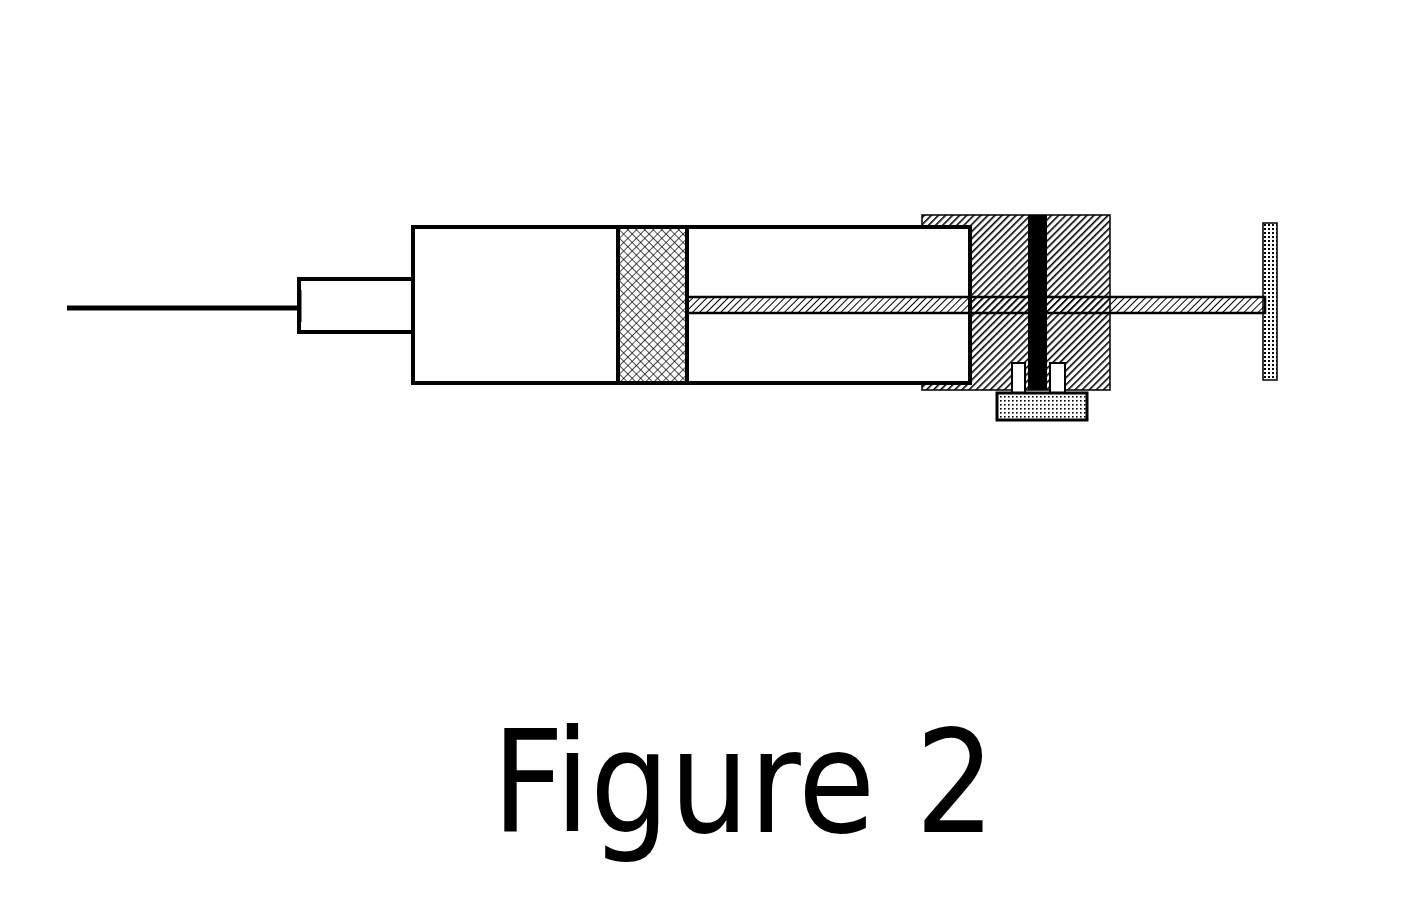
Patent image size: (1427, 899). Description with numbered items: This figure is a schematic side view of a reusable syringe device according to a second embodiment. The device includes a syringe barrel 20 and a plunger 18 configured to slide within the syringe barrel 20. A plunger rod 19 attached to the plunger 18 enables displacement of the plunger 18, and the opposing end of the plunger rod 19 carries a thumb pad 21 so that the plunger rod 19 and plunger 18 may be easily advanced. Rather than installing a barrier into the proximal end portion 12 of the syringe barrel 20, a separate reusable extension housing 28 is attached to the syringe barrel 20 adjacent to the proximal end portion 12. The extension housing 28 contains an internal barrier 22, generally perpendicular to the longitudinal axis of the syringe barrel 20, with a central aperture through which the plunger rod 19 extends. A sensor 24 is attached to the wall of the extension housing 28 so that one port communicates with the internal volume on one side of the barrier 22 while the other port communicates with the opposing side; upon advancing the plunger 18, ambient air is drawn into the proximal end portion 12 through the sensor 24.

The proximal end portion 12 is at (903, 379).
The plunger 18 is at (655, 228).
The plunger rod 19 is at (762, 295).
The syringe barrel 20 is at (563, 227).
The thumb pad 21 is at (1275, 277).
The internal barrier 22 is at (1043, 272).
The sensor 24 is at (1052, 417).
The extension housing 28 is at (1022, 223).